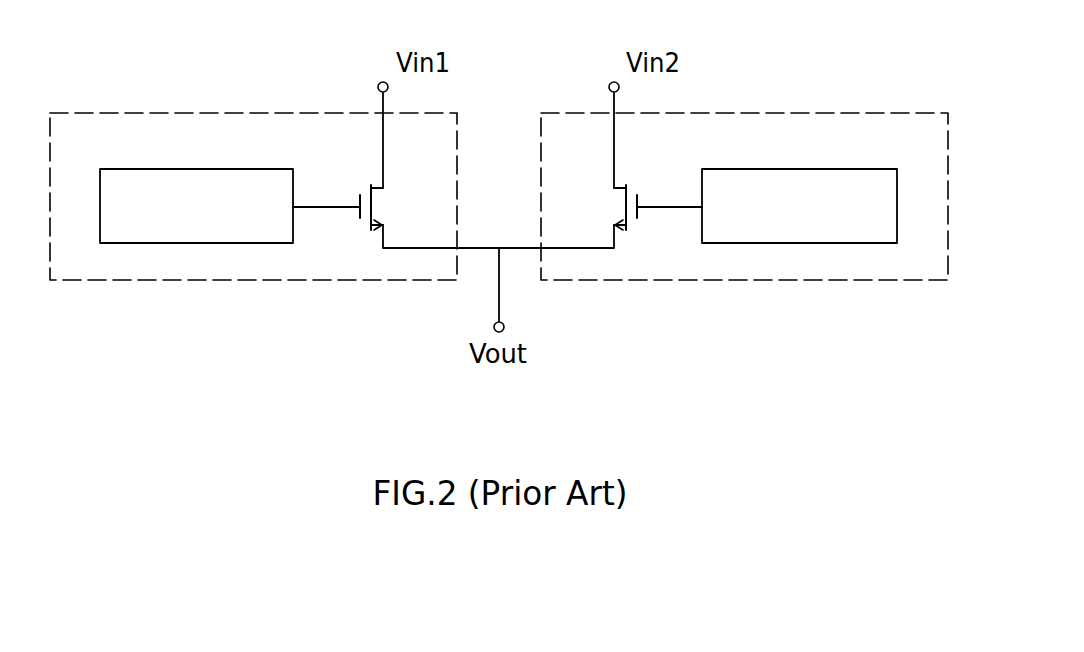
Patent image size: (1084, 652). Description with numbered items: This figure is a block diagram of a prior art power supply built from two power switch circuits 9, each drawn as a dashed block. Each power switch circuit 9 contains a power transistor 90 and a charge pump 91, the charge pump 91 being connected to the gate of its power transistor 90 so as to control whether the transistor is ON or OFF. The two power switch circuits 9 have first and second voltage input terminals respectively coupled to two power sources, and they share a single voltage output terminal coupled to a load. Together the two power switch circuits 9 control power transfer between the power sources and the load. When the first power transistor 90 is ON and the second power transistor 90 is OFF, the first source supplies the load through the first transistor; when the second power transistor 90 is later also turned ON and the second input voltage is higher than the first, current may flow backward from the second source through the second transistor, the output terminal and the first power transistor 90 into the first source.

The power switch circuit 9 is at (159, 106).
The power transistor 90 is at (370, 170).
The charge pump 91 is at (155, 243).